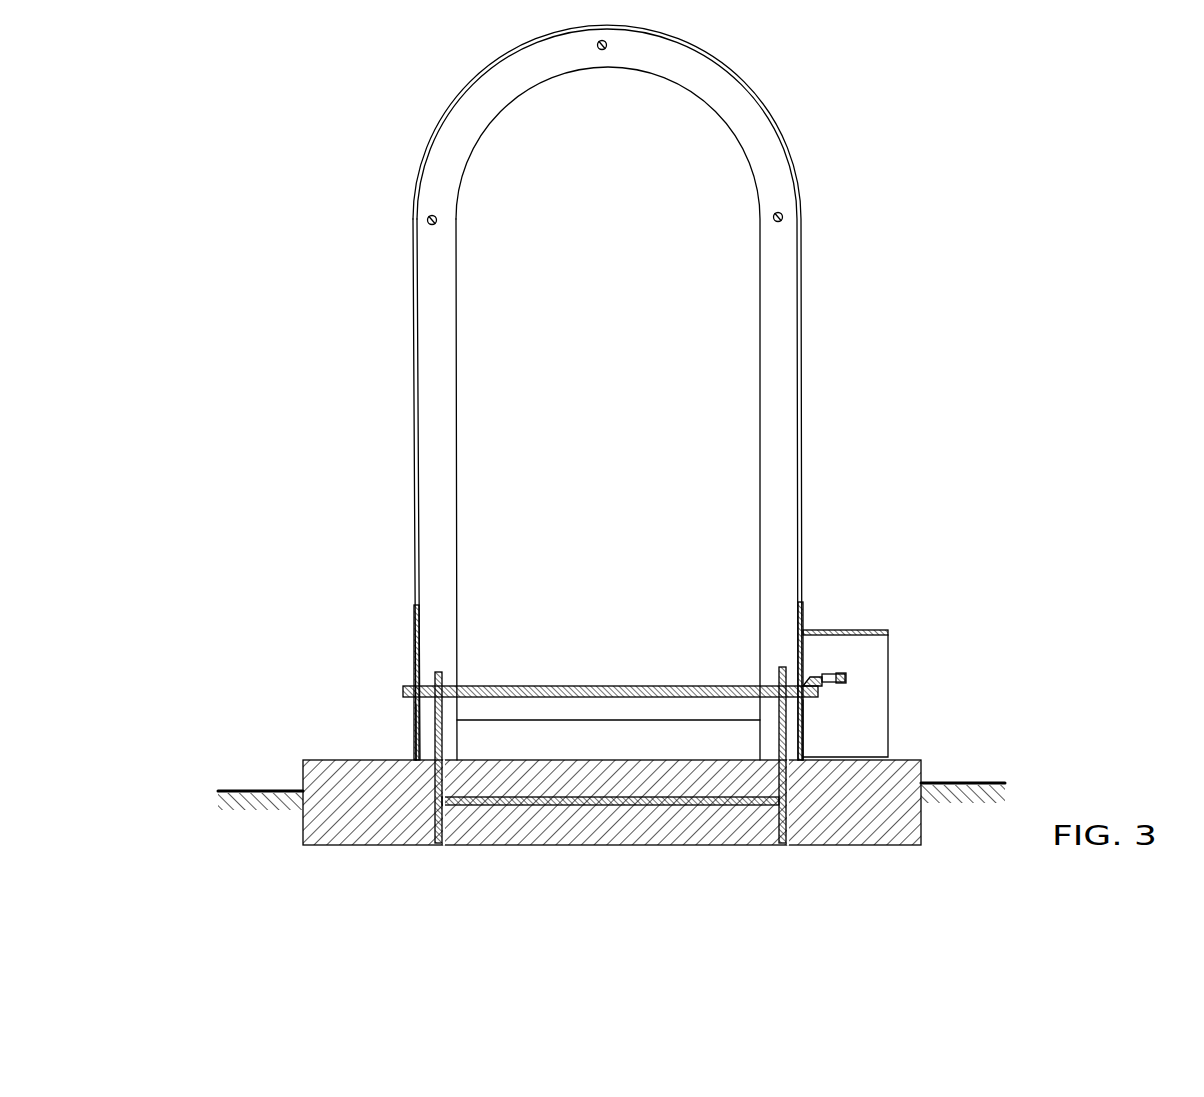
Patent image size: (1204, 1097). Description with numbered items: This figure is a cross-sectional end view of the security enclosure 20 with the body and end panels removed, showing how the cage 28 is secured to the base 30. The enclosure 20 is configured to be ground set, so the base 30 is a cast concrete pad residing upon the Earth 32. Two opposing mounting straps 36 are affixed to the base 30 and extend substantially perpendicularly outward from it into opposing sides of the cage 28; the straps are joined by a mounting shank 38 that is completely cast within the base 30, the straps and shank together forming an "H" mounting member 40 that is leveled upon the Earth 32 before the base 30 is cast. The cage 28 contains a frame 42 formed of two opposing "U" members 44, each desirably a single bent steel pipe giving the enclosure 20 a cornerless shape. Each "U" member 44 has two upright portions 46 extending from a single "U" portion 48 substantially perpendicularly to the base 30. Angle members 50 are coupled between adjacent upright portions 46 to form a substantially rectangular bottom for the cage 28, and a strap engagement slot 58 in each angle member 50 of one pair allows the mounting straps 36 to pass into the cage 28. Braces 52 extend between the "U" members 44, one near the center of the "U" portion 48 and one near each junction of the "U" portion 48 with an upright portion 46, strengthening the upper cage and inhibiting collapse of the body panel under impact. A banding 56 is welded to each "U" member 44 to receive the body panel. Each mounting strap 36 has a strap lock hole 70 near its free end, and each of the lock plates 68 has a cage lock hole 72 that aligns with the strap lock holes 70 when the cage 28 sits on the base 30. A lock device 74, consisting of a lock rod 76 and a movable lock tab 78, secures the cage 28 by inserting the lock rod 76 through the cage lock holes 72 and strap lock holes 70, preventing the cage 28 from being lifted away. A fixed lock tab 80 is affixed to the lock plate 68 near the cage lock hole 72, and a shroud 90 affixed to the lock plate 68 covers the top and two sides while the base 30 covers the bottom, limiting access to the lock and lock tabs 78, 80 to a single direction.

The security enclosure 20 is at (1093, 617).
The cage 28 is at (905, 207).
The base 30 is at (340, 775).
The Earth 32 is at (262, 790).
The mounting straps 36 is at (437, 823).
The mounting shank 38 is at (722, 805).
The "H" mounting member 40 is at (438, 823).
The frame 42 is at (905, 273).
The "U" member 44 is at (778, 290).
The upright portions 46 is at (430, 479).
The "U" portion 48 is at (717, 85).
The angle members 50 is at (585, 735).
The brace 52 is at (602, 52).
The banding 56 is at (800, 372).
The strap engagement slot 58 is at (437, 780).
The lock plates 68 is at (416, 625).
The strap lock hole 70 is at (450, 686).
The cage lock hole 72 is at (404, 688).
The lock device 74 is at (655, 695).
The lock rod 76 is at (535, 693).
The lock tab 78 is at (848, 678).
The lock tab 80 is at (822, 678).
The shroud 90 is at (884, 630).